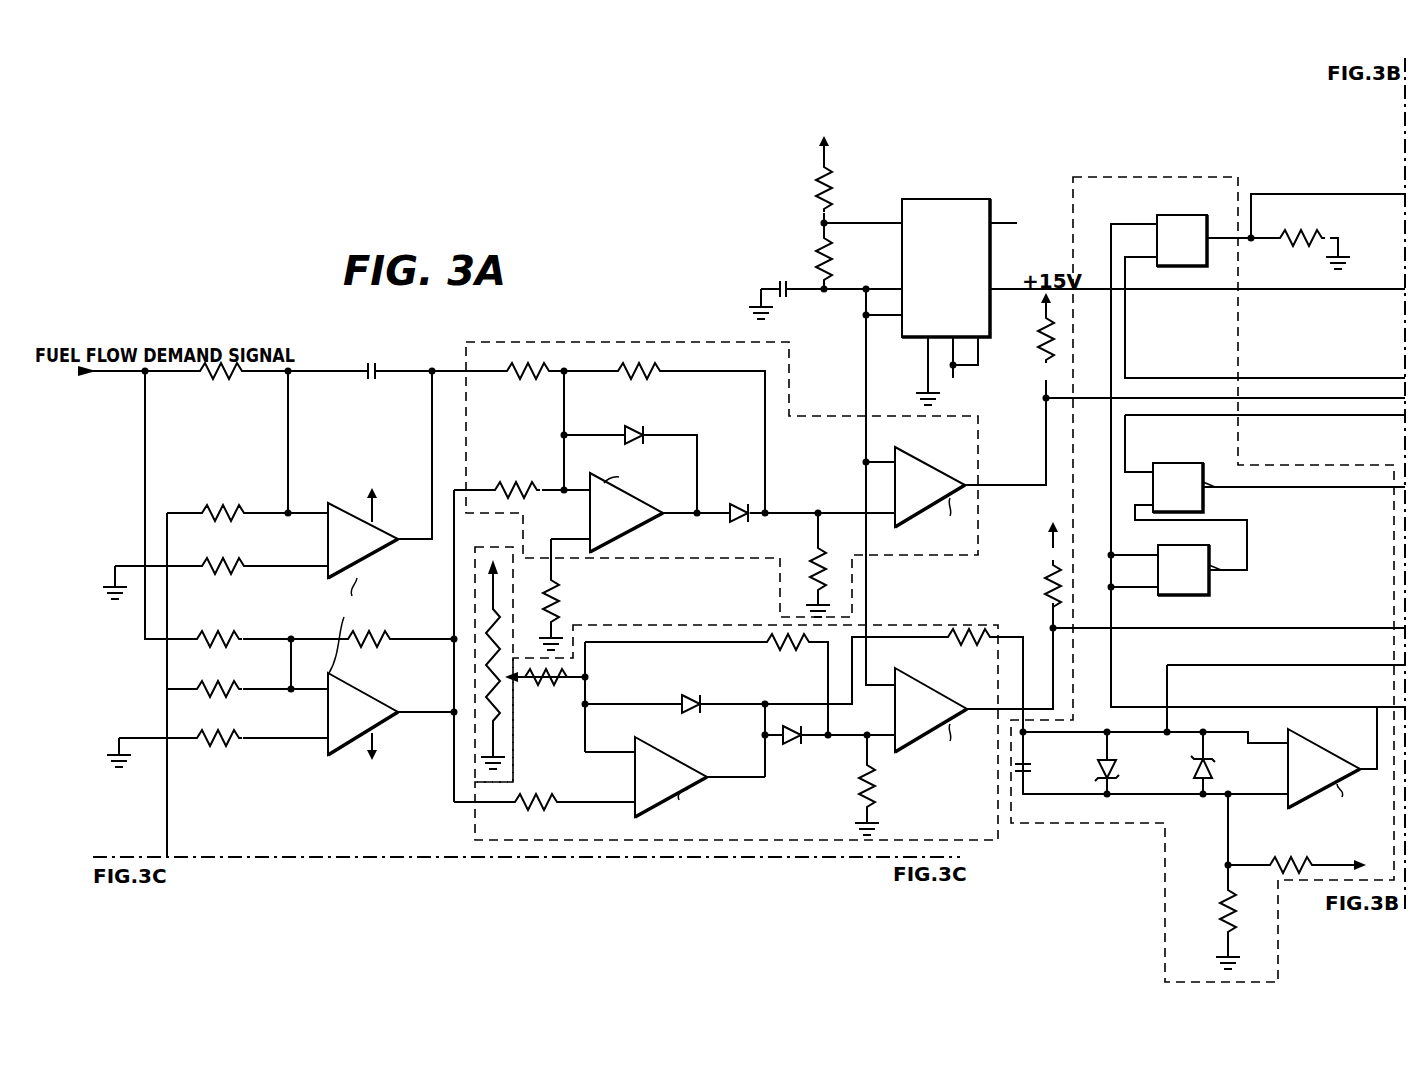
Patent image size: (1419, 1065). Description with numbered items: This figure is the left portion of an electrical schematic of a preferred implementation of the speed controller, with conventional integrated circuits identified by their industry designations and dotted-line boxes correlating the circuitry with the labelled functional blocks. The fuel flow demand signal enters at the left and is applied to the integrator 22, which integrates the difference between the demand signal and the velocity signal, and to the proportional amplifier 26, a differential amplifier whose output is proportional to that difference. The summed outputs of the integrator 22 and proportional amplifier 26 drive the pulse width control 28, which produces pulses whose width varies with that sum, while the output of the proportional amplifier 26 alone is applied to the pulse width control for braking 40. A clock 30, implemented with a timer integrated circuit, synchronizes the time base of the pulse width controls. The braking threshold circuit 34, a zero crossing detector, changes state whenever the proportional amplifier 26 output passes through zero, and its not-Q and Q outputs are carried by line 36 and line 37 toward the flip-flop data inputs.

The integrator 22 is at (341, 503).
The proportional amplifier 26 is at (366, 693).
The pulse width control 28 is at (663, 341).
The clock 30 is at (958, 199).
The braking threshold circuit 34 is at (472, 755).
The line 36 is at (1338, 488).
The line 37 is at (1349, 194).
The pulse width control for braking 40 is at (668, 624).